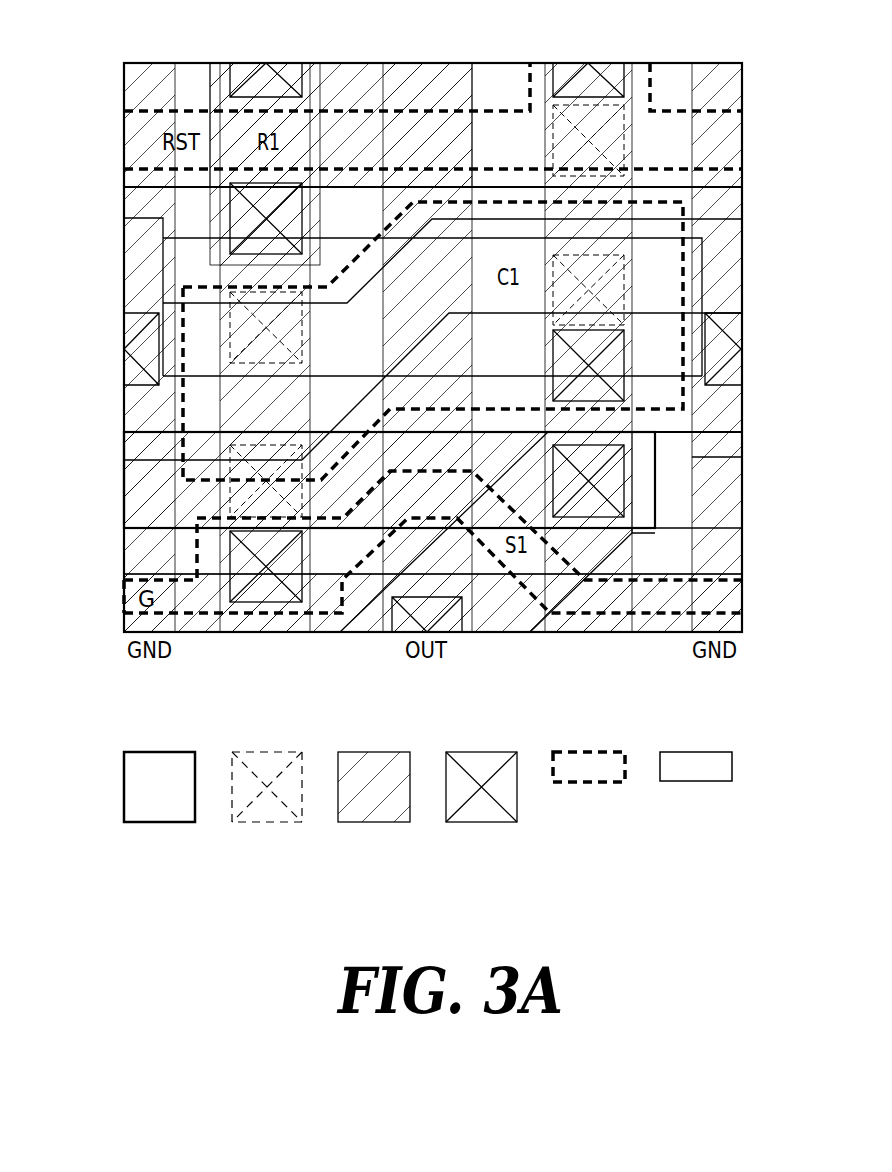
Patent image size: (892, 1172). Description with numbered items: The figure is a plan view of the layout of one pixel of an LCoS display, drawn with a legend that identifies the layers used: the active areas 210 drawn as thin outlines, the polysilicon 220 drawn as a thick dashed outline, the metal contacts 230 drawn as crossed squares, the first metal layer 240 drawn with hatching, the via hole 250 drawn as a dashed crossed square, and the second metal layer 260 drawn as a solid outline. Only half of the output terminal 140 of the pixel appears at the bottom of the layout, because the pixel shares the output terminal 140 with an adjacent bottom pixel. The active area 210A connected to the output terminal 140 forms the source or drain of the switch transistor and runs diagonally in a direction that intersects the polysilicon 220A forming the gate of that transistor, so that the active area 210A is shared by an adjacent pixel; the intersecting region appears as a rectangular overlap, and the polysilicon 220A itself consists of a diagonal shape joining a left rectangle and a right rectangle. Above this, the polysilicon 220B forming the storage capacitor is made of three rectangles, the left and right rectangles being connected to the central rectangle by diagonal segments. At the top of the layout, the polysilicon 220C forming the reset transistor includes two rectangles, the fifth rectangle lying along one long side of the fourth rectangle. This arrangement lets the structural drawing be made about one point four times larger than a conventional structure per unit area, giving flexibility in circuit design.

The output terminal 140 is at (402, 628).
The active area 210A is at (655, 475).
The polysilicon 220A is at (197, 553).
The polysilicon 220B is at (183, 413).
The polysilicon 220C is at (348, 111).
The active areas 210 is at (696, 773).
The polysilicon 220 is at (589, 773).
The metal contacts 230 is at (479, 809).
The first metal layer 240 is at (374, 794).
The via hole 250 is at (267, 794).
The second metal layer 260 is at (159, 794).